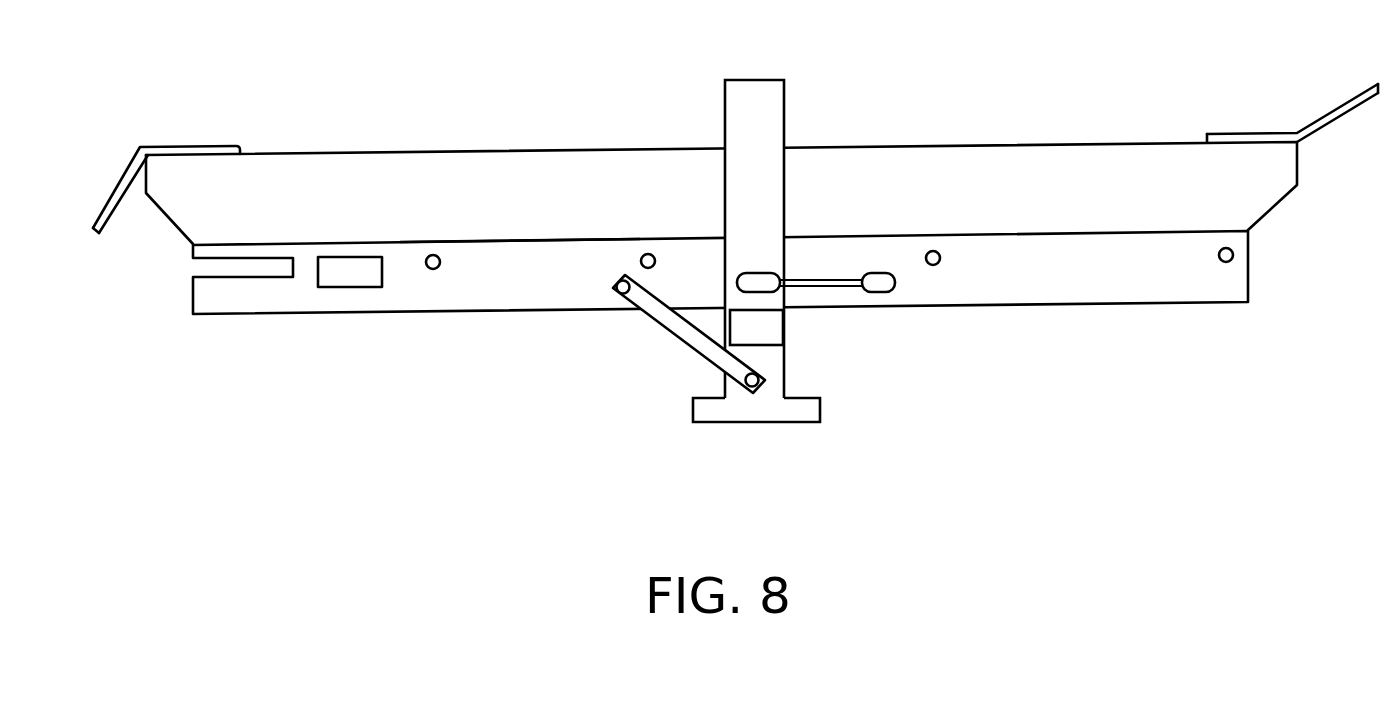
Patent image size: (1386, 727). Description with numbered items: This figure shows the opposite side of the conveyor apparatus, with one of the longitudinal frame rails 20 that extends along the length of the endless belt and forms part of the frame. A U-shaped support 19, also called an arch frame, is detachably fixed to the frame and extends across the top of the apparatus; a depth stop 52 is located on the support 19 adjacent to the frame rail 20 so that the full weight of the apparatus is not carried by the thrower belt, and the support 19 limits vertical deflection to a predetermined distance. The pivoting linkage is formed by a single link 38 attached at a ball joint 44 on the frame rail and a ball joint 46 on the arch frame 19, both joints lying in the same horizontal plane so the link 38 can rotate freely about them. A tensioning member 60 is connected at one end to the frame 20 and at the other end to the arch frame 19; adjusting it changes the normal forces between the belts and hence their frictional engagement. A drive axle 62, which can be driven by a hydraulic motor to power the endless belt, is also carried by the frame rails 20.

The support 19 is at (785, 93).
The frame rail 20 is at (1073, 282).
The link 38 is at (840, 287).
The ball joint 44 is at (737, 277).
The ball joint 46 is at (883, 272).
The depth stop 52 is at (787, 333).
The tensioning member 60 is at (670, 335).
The drive axle 62 is at (515, 242).